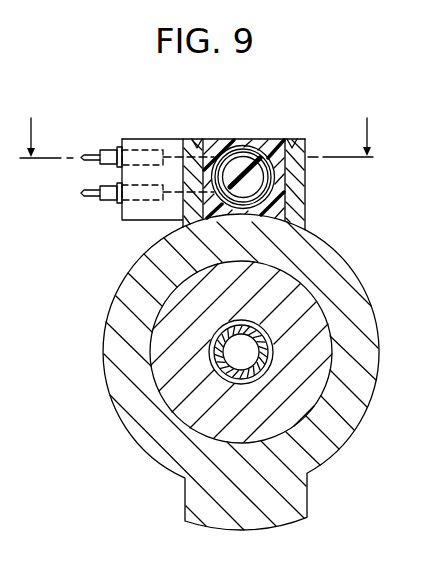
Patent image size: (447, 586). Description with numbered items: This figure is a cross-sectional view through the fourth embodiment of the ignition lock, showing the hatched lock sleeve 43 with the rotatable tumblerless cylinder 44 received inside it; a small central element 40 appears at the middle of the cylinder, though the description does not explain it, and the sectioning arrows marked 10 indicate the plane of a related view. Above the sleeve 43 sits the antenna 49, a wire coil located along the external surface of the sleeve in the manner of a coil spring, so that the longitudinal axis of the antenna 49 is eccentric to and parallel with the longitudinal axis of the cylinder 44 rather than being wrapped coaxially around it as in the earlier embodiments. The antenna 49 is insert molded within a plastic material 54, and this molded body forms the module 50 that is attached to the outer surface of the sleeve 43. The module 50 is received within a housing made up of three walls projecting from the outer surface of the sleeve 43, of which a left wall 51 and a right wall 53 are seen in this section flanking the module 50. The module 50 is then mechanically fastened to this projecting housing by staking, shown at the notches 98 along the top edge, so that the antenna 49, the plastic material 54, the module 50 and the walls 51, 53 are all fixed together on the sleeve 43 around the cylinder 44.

The section line 10- 10 is at (201, 152).
The bearing / shaft bore 40 is at (223, 345).
The sleeve 43 is at (189, 457).
The rotatable tumblerless cylinder 44 is at (178, 398).
The antenna 49 is at (280, 205).
The module 50 is at (226, 134).
The wall 51 is at (193, 207).
The wall 53 is at (294, 178).
The plastic material 54 is at (267, 146).
The staking 98 is at (195, 142).